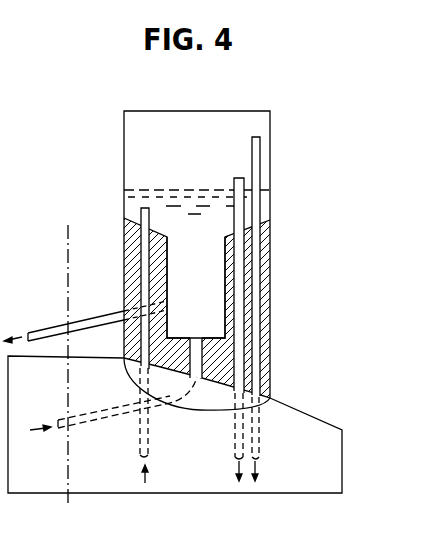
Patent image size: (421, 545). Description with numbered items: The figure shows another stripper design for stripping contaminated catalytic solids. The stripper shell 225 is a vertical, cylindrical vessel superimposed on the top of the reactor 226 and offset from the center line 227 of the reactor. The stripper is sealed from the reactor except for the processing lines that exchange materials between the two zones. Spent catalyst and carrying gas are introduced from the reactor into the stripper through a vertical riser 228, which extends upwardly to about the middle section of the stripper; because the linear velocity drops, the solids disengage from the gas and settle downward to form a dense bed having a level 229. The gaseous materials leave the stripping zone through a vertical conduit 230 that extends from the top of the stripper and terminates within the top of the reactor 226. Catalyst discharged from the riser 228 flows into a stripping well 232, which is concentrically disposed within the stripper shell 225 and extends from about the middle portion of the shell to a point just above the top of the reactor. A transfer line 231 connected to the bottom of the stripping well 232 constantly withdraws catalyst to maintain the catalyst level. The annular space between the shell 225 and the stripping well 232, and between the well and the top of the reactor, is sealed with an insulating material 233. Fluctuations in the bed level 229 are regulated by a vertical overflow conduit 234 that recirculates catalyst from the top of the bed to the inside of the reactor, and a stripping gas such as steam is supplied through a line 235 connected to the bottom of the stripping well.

The stripper shell 225 is at (271, 184).
The reactor 226 is at (293, 403).
The center line 227 is at (68, 282).
The vertical riser 228 is at (141, 214).
The level 229 is at (157, 189).
The vertical conduit 230 is at (261, 151).
The transfer line 231 is at (88, 321).
The stripping well 232 is at (167, 313).
The insulating material 233 is at (270, 299).
The vertical overflow conduit 234 is at (234, 186).
The line 235 is at (110, 420).